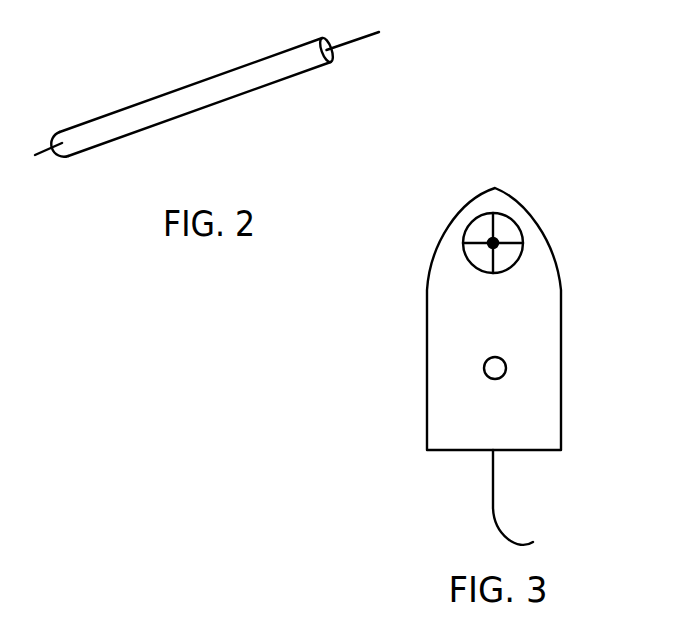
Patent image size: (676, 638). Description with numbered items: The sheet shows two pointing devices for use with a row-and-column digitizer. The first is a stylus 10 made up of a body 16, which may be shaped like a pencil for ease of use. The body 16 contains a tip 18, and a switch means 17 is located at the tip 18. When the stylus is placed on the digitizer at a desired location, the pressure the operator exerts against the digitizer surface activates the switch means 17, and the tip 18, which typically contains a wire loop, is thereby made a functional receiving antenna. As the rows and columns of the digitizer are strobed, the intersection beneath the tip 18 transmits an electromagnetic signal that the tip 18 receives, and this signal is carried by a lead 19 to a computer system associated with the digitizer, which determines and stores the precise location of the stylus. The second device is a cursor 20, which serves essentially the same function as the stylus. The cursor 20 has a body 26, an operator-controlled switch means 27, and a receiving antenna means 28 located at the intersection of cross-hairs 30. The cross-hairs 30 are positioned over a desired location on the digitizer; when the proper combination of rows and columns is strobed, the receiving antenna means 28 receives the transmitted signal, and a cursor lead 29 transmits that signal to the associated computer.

In FIG. 2, the catheter device 10 is at (198, 123).
In FIG. 2, the body 16 is at (140, 102).
In FIG. 2, the switch means 17 is at (52, 150).
In FIG. 2, the tip 18 is at (50, 153).
In FIG. 2, the lead 19 is at (358, 40).
In FIG. 3, the cursor 20 is at (482, 366).
In FIG. 3, the body 26 is at (427, 290).
In FIG. 3, the switch means 27 is at (484, 368).
In FIG. 3, the receiving antenna means 28 is at (495, 244).
In FIG. 3, the cursor lead 29 is at (495, 487).
In FIG. 3, the cross-hairs 30 is at (516, 263).